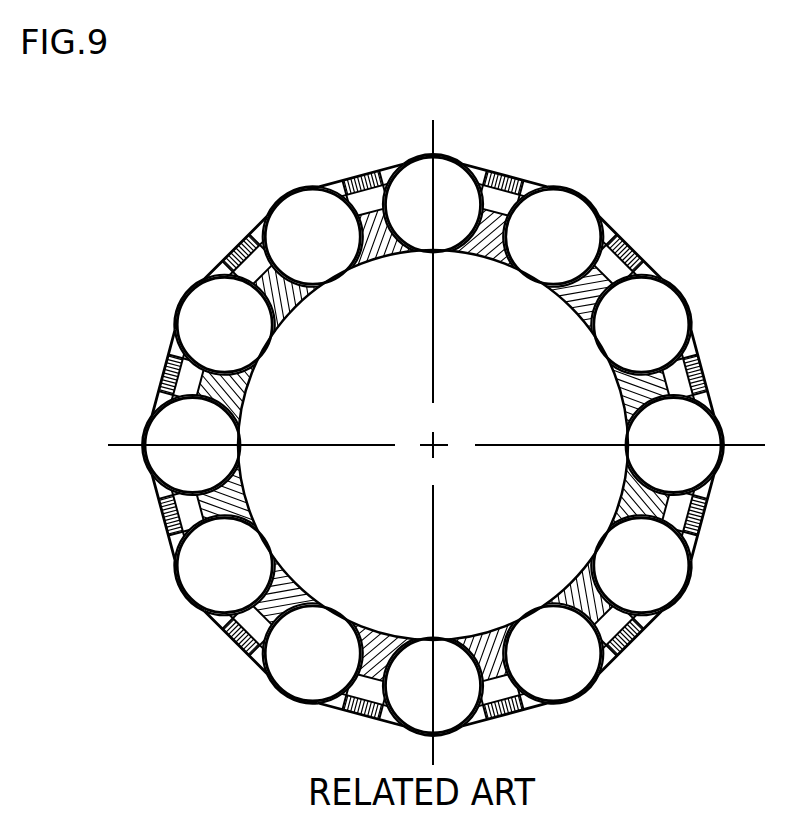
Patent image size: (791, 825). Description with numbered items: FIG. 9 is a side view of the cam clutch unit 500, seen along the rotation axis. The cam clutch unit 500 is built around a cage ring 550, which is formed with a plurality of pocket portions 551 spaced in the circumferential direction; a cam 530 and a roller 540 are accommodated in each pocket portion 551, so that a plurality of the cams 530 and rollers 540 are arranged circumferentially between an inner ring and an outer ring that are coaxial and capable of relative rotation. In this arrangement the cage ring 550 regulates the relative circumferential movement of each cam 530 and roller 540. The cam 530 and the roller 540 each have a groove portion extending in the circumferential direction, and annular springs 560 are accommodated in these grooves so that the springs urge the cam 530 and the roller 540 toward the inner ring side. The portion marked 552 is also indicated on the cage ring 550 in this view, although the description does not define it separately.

The cam clutch unit 500 is at (157, 150).
The cam 530 is at (413, 197).
The roller 540 is at (563, 217).
The cage ring 550 is at (225, 247).
The pocket portion 551 is at (478, 166).
The inner cage portion 552 is at (604, 208).
The annular spring 560 is at (505, 178).